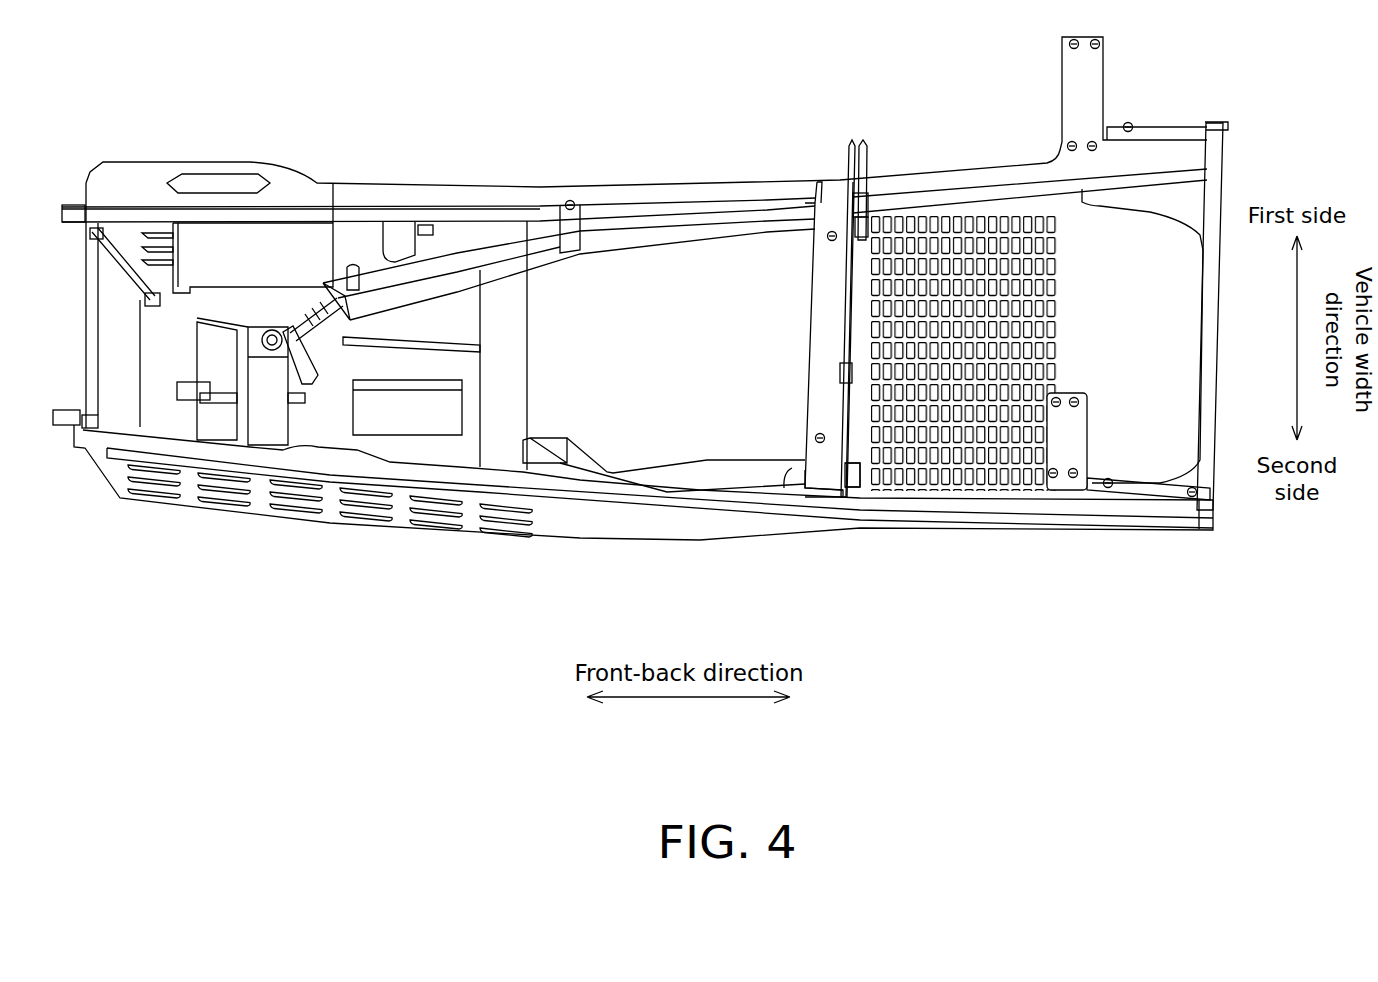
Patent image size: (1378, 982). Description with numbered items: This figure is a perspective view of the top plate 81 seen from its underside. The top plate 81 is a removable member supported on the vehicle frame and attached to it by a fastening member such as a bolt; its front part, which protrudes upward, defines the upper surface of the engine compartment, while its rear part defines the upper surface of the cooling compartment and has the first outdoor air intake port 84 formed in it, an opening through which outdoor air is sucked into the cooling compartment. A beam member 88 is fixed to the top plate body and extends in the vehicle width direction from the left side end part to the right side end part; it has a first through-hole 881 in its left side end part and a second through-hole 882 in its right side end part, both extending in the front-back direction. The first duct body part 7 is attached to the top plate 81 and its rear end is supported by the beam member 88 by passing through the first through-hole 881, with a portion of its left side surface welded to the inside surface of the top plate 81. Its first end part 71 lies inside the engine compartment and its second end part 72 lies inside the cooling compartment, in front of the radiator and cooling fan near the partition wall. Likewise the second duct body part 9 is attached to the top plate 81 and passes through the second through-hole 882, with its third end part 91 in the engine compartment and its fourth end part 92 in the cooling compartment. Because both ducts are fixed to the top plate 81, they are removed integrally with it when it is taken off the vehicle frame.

The first duct body part 7 is at (457, 252).
The first end part 71 is at (333, 250).
The second end part 72 is at (863, 210).
The top plate 81 is at (673, 150).
The first outdoor air intake port 84 is at (965, 245).
The beam member 88 is at (818, 293).
The first through-hole 881 is at (816, 208).
The second through-hole 882 is at (793, 470).
The second duct body part 9 is at (720, 474).
The third end part 91 is at (573, 460).
The fourth end part 92 is at (860, 470).